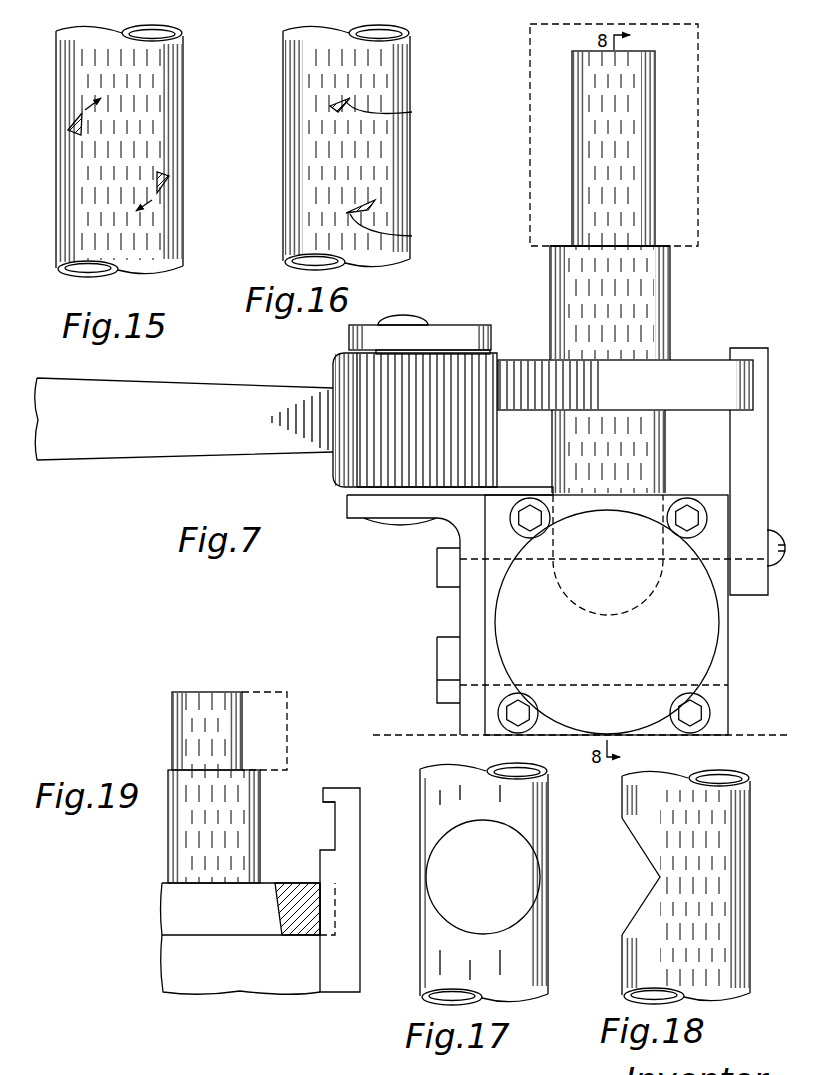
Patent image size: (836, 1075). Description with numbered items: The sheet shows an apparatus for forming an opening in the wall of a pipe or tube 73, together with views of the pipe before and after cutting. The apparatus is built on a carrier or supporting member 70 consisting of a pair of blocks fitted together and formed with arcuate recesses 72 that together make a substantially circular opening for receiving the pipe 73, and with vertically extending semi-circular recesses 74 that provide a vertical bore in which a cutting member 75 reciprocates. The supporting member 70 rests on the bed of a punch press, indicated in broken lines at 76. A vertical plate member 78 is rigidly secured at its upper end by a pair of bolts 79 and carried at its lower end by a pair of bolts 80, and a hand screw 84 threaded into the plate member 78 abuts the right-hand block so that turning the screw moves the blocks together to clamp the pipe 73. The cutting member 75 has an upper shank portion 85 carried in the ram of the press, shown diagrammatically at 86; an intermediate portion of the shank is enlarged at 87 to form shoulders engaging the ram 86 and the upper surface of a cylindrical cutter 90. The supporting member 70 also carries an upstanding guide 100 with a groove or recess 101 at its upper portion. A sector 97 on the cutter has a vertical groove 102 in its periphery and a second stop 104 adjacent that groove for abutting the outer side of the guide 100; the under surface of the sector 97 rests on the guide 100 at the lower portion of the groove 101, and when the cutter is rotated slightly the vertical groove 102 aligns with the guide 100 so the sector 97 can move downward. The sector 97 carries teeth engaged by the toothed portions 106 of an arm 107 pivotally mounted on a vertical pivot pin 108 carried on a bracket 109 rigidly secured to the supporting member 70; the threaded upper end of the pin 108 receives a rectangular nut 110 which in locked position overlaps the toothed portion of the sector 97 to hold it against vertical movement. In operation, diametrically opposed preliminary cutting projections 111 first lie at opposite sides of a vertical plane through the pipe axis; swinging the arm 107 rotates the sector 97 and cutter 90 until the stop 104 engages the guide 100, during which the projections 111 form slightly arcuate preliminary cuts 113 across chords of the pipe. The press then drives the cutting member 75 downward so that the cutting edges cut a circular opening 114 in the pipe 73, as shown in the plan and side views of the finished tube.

In FIG. 7, the carrier or supporting member 70 is at (483, 606).
In FIG. 19, the carrier or supporting member 70 is at (160, 966).
In FIG. 7, the arcuate recesses 72 is at (553, 685).
In FIG. 15, the pipe or tube 73 is at (178, 78).
In FIG. 16, the pipe or tube 73 is at (412, 72).
In FIG. 17, the pipe or tube 73 is at (531, 953).
In FIG. 18, the pipe or tube 73 is at (641, 963).
In FIG. 7, the semi-circular recess 74 is at (553, 536).
In FIG. 7, the cutting member 75 is at (673, 302).
In FIG. 19, the cutting member 75 is at (165, 852).
In FIG. 7, the bed of punch press 76 is at (403, 733).
In FIG. 7, the vertical plate member 78 is at (728, 670).
In FIG. 7, the bolts 79 is at (695, 521).
In FIG. 7, the bolts 80 is at (695, 716).
In FIG. 7, the hand screw 84 is at (707, 626).
In FIG. 7, the upper shank portion 85 is at (643, 112).
In FIG. 19, the upper shank portion 85 is at (210, 698).
In FIG. 7, the ram 86 is at (698, 130).
In FIG. 19, the ram 86 is at (288, 704).
In FIG. 7, the enlarged portion of shank 87 is at (663, 267).
In FIG. 7, the cylindrical cutter 90 is at (656, 433).
In FIG. 7, the sector 97 is at (680, 365).
In FIG. 19, the sector 97 is at (165, 916).
In FIG. 7, the upstanding guide 100 is at (752, 459).
In FIG. 19, the upstanding guide 100 is at (352, 864).
In FIG. 19, the groove or recess 101 is at (328, 804).
In FIG. 19, the vertical groove 102 is at (318, 893).
In FIG. 19, the second stop 104 is at (335, 900).
In FIG. 7, the toothed portions 106 is at (345, 453).
In FIG. 7, the arm 107 is at (100, 452).
In FIG. 7, the vertical pivot pin 108 is at (405, 318).
In FIG. 7, the bracket 109 is at (364, 512).
In FIG. 7, the rectangular nut 110 is at (478, 328).
In FIG. 15, the preliminary cutting projections 111 is at (68, 120).
In FIG. 16, the preliminary cutting projections 111 is at (397, 110).
In FIG. 16, the preliminary cuts 113 is at (318, 108).
In FIG. 17, the circular opening 114 is at (526, 849).
In FIG. 18, the circular opening 114 is at (650, 858).